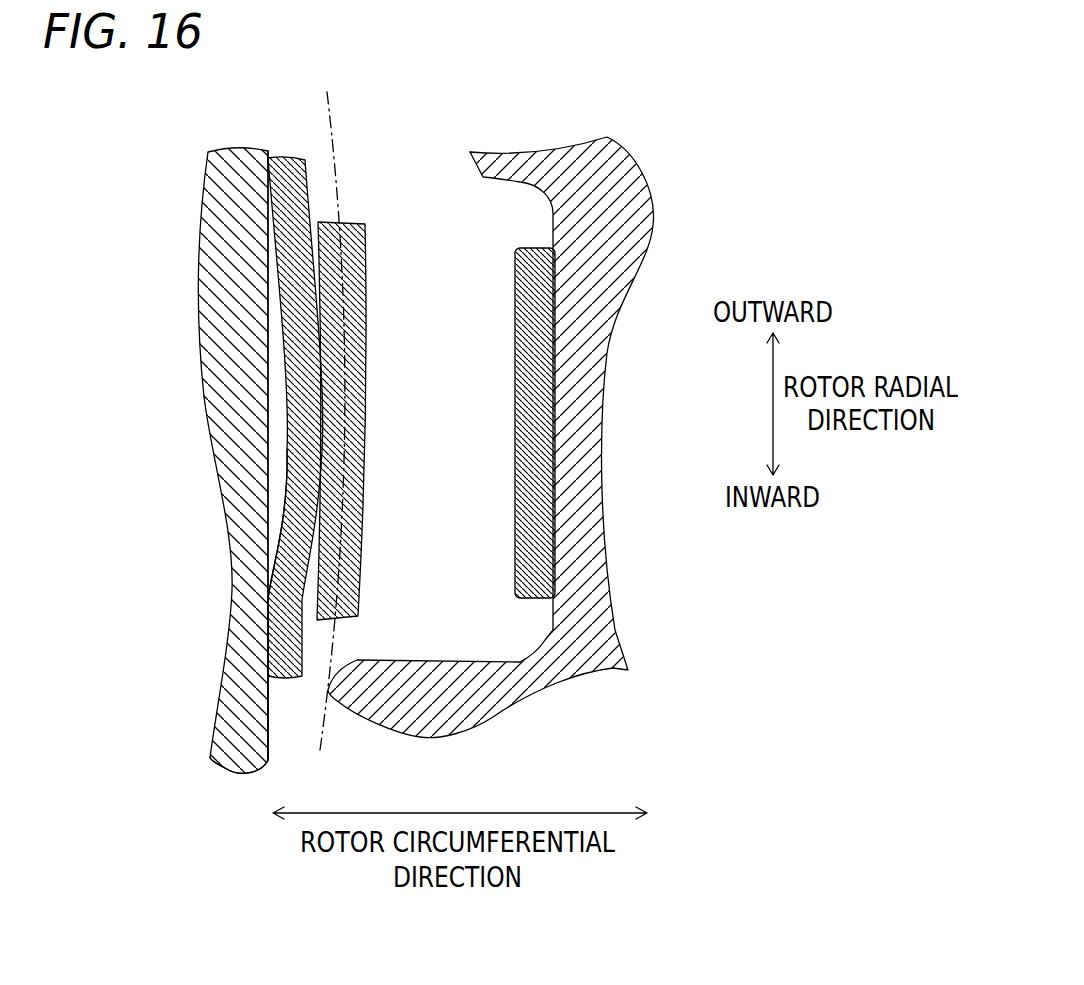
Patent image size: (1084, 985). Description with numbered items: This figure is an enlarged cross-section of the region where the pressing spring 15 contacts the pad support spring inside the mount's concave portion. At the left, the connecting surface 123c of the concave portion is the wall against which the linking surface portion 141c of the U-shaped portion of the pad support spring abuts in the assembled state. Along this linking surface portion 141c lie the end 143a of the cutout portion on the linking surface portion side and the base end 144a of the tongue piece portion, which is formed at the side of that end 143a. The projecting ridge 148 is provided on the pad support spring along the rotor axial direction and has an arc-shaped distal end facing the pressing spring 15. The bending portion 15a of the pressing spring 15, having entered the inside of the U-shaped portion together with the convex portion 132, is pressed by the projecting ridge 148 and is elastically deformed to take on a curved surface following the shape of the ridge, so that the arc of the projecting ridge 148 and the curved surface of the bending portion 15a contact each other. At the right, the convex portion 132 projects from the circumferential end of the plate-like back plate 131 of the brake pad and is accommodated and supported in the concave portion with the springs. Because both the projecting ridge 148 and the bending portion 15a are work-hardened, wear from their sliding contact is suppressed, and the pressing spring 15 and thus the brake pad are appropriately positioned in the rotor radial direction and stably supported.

The pressing spring 15 is at (414, 184).
The bending portion 15a is at (367, 310).
The projecting ridge 148 is at (288, 422).
The end of the cutout portion 143a is at (270, 593).
The base end of the tongue piece portion 144a is at (270, 594).
The linking surface portion 141c is at (268, 650).
The connecting surface 123c is at (268, 678).
The back plate 131 is at (605, 400).
The convex portion 132 is at (472, 727).